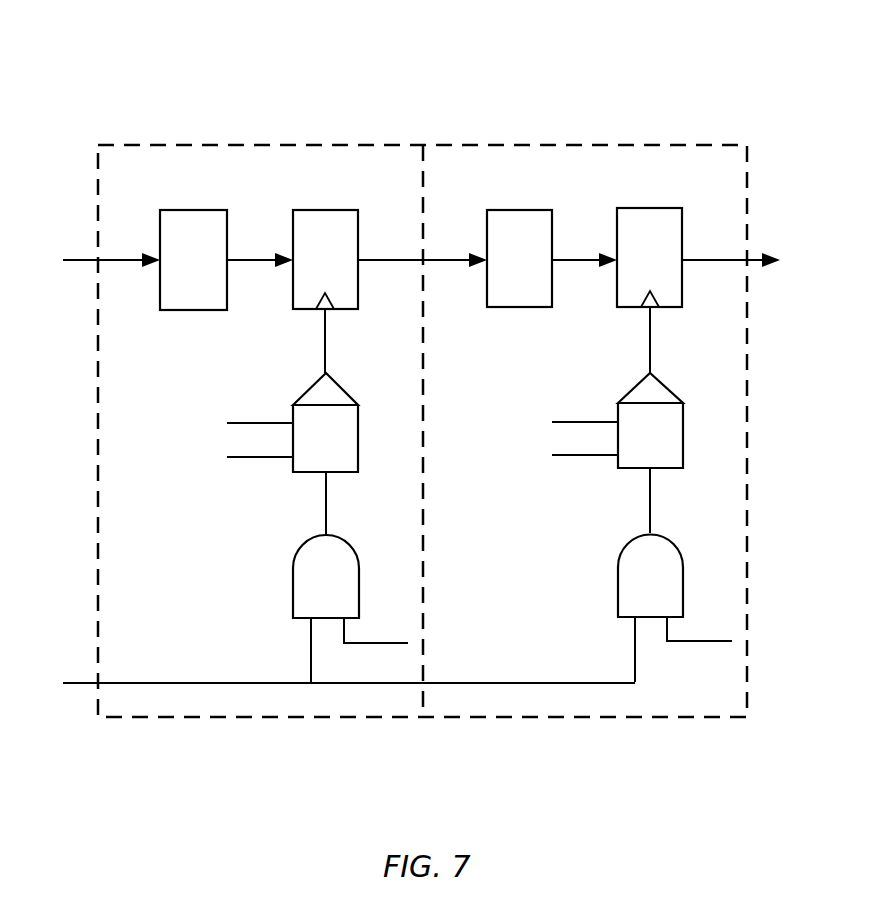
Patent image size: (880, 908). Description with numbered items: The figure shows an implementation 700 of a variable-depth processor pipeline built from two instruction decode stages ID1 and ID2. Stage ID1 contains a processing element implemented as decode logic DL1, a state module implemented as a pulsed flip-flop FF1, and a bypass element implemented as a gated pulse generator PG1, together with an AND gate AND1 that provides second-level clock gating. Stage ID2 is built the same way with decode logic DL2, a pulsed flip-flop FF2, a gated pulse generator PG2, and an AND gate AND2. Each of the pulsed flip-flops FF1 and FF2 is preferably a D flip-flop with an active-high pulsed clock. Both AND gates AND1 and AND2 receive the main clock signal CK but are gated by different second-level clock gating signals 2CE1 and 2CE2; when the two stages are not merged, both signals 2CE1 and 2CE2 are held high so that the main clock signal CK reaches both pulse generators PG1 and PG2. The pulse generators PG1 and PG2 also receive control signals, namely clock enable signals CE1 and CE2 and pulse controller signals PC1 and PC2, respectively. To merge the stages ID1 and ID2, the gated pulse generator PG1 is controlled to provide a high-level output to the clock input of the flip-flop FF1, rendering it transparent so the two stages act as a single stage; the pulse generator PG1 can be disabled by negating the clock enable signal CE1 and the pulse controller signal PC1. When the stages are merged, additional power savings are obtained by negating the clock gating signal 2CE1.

The implementation 700 is at (418, 66).
The instruction decode stage ID1 is at (260, 431).
The instruction decode stage ID2 is at (585, 431).
The decode logic DL1 is at (193, 260).
The decode logic DL2 is at (519, 258).
The pulsed flip-flop FF1 is at (325, 291).
The pulsed flip-flop FF2 is at (649, 290).
The gated pulse generator PG1 is at (325, 454).
The gated pulse generator PG2 is at (650, 453).
The AND gate AND1 is at (326, 609).
The AND gate AND2 is at (650, 609).
The clock enable signal CE1 is at (260, 413).
The pulse controller signal PC1 is at (260, 446).
The clock enable signal CE2 is at (585, 411).
The pulse controller signal PC2 is at (585, 444).
The second-level clock gating signal 2CE1 is at (376, 630).
The second-level clock gating signal 2CE2 is at (699, 629).
The main clock signal CK is at (349, 672).